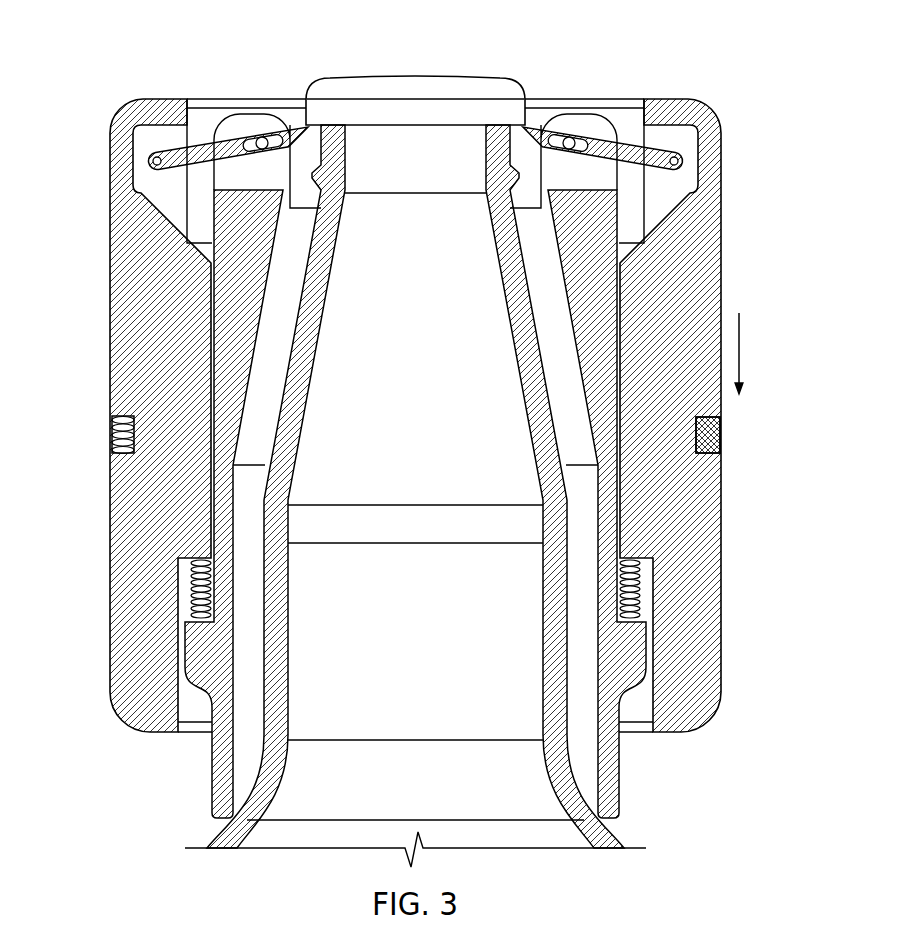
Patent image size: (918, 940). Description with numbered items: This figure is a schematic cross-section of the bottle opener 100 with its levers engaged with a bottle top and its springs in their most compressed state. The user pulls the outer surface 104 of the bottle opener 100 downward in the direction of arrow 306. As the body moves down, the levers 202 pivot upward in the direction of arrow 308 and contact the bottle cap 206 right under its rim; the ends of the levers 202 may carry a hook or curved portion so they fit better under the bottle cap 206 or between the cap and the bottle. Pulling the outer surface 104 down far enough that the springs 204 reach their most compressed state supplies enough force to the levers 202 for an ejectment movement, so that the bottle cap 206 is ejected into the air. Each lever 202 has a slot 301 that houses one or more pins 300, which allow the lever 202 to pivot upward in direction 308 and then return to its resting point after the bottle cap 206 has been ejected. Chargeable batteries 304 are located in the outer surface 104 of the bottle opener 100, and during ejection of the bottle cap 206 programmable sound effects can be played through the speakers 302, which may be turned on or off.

The bottle opener 100 is at (108, 288).
The outer surface 104 is at (723, 263).
The levers 202 is at (178, 150).
The springs 204 is at (190, 578).
The bottle cap 206 is at (502, 76).
The pins 300 is at (570, 133).
The slot 301 is at (268, 130).
The speakers 302 is at (723, 437).
The chargeable batteries 304 is at (108, 437).
The arrow 306 is at (741, 352).
The arrow 308 is at (254, 168).